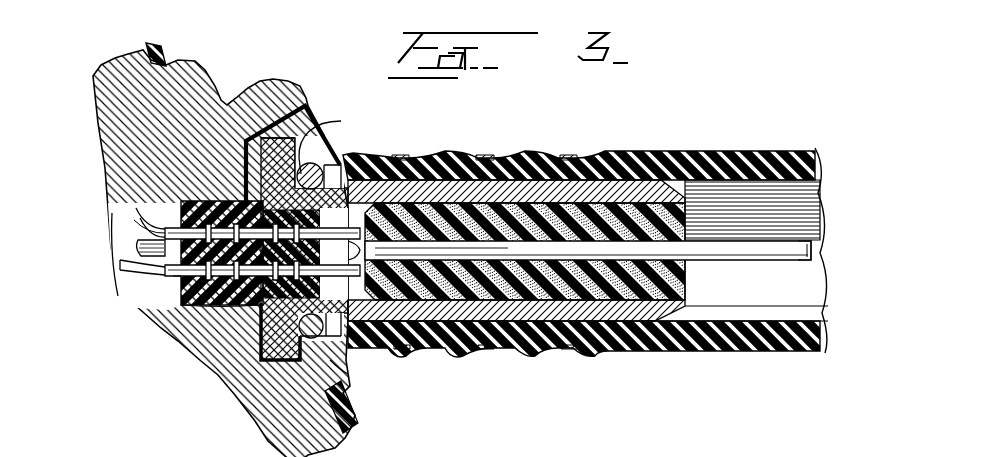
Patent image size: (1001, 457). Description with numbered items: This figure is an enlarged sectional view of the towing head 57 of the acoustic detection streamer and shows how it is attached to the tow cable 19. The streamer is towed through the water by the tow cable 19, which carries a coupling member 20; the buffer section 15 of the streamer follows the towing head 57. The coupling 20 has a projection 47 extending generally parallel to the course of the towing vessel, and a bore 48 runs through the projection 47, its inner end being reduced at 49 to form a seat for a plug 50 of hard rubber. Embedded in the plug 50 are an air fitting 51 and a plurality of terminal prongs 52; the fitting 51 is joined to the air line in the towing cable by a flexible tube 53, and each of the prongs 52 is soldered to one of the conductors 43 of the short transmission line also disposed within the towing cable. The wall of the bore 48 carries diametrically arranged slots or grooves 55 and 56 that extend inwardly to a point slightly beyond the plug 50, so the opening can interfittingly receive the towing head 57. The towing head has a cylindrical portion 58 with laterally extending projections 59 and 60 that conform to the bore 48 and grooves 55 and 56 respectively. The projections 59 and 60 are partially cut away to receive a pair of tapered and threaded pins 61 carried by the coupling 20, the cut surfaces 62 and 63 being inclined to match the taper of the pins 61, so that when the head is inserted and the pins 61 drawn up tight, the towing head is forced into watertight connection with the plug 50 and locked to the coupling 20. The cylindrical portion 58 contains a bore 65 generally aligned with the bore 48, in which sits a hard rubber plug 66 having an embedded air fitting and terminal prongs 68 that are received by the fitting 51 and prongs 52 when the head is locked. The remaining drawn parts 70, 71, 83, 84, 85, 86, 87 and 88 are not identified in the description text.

The buffer section 15 is at (665, 347).
The tow cable 19 is at (155, 44).
The coupling member 20 is at (192, 62).
The conductors 43 is at (134, 206).
The projection 47 is at (273, 86).
The bore 48 is at (211, 195).
The reduced inner end of bore 49 is at (178, 195).
The plug 50 is at (175, 290).
The air fitting 51 is at (130, 242).
The terminal prongs 52 is at (166, 271).
The flexible tube 53 is at (137, 217).
The slot or groove 55 is at (306, 118).
The slot or groove 56 is at (347, 348).
The towing head 57 is at (684, 298).
The cylindrical portion 58 is at (340, 152).
The projection 59 is at (268, 132).
The projection 60 is at (268, 322).
The tapered and threaded pins 61 is at (246, 385).
The cut surface 62 is at (276, 140).
The cut surface 63 is at (317, 249).
The bore 65 is at (262, 306).
The plug 66 is at (266, 292).
The terminal prongs 68 is at (380, 152).
The center conductor 70 is at (365, 246).
The inner tube 71 is at (583, 155).
The conductor end 83 is at (764, 250).
The insulation 84 is at (680, 262).
The outer braid shield 85 is at (720, 146).
The corrugation 86 is at (517, 150).
The dielectric core 87 is at (545, 165).
The corrugation ribs 88 is at (397, 345).